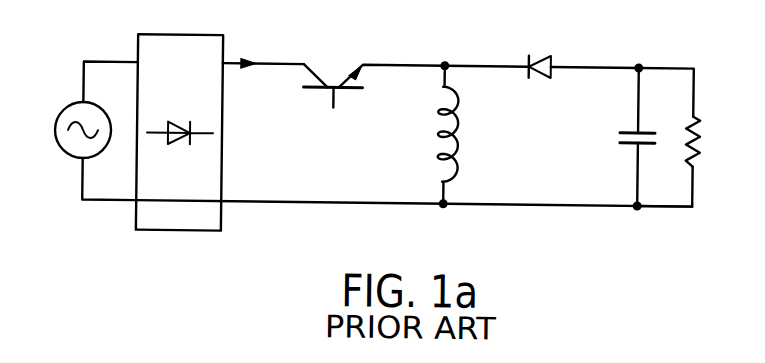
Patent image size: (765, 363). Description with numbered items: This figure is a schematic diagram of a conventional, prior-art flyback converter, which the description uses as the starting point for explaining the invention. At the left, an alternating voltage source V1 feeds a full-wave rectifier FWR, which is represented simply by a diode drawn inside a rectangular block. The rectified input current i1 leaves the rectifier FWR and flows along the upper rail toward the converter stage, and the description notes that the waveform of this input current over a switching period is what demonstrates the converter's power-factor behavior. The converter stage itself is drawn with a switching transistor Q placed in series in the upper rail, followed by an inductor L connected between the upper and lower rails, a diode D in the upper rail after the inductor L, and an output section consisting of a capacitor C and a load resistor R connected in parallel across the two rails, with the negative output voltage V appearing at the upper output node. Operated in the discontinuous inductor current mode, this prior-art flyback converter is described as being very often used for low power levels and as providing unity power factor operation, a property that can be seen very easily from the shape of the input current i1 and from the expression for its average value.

The voltage source V1 is at (78, 130).
The full-wave rectifier FWR is at (180, 115).
The input current i1 is at (264, 47).
The switching transistor Q is at (374, 70).
The inductor L is at (430, 135).
The diode D is at (542, 50).
The negative output voltage - V is at (656, 118).
The output capacitor C is at (623, 136).
The load resistor R is at (684, 137).